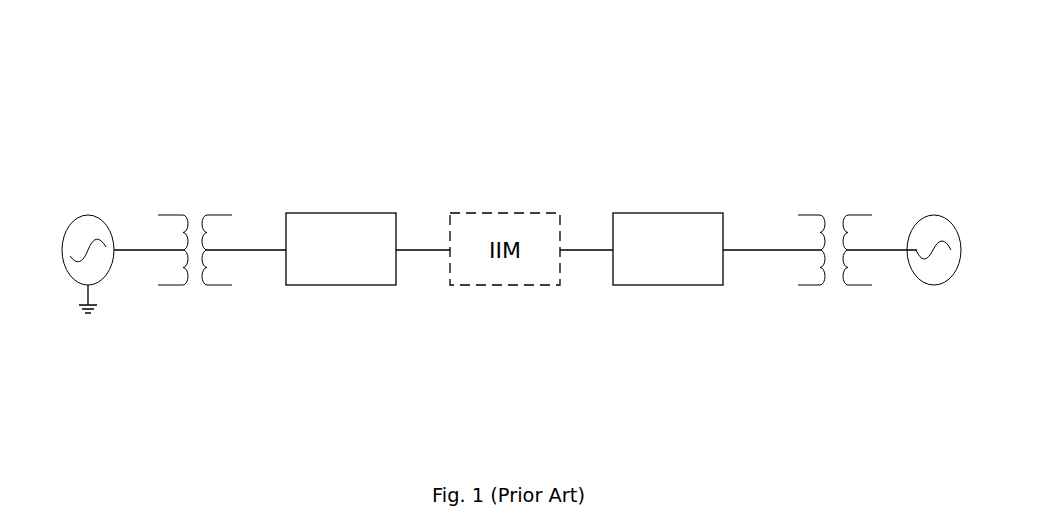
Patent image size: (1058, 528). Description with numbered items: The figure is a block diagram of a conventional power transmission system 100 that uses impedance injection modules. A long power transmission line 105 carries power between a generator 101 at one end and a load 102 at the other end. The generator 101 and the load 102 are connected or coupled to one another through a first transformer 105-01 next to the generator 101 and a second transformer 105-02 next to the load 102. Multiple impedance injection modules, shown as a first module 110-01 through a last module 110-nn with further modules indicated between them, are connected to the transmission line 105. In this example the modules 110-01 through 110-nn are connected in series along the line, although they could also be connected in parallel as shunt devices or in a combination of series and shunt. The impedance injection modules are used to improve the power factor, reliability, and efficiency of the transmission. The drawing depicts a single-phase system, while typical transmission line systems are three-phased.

The power transmission system 100 is at (490, 64).
The generator 101 is at (87, 215).
The load 102 is at (942, 215).
The long power transmission line 105 is at (748, 250).
The transformer 105-01 is at (183, 207).
The transformer 105-02 is at (825, 223).
The impedance injection module 110-01 is at (333, 285).
The impedance injection module 110-nn is at (670, 285).